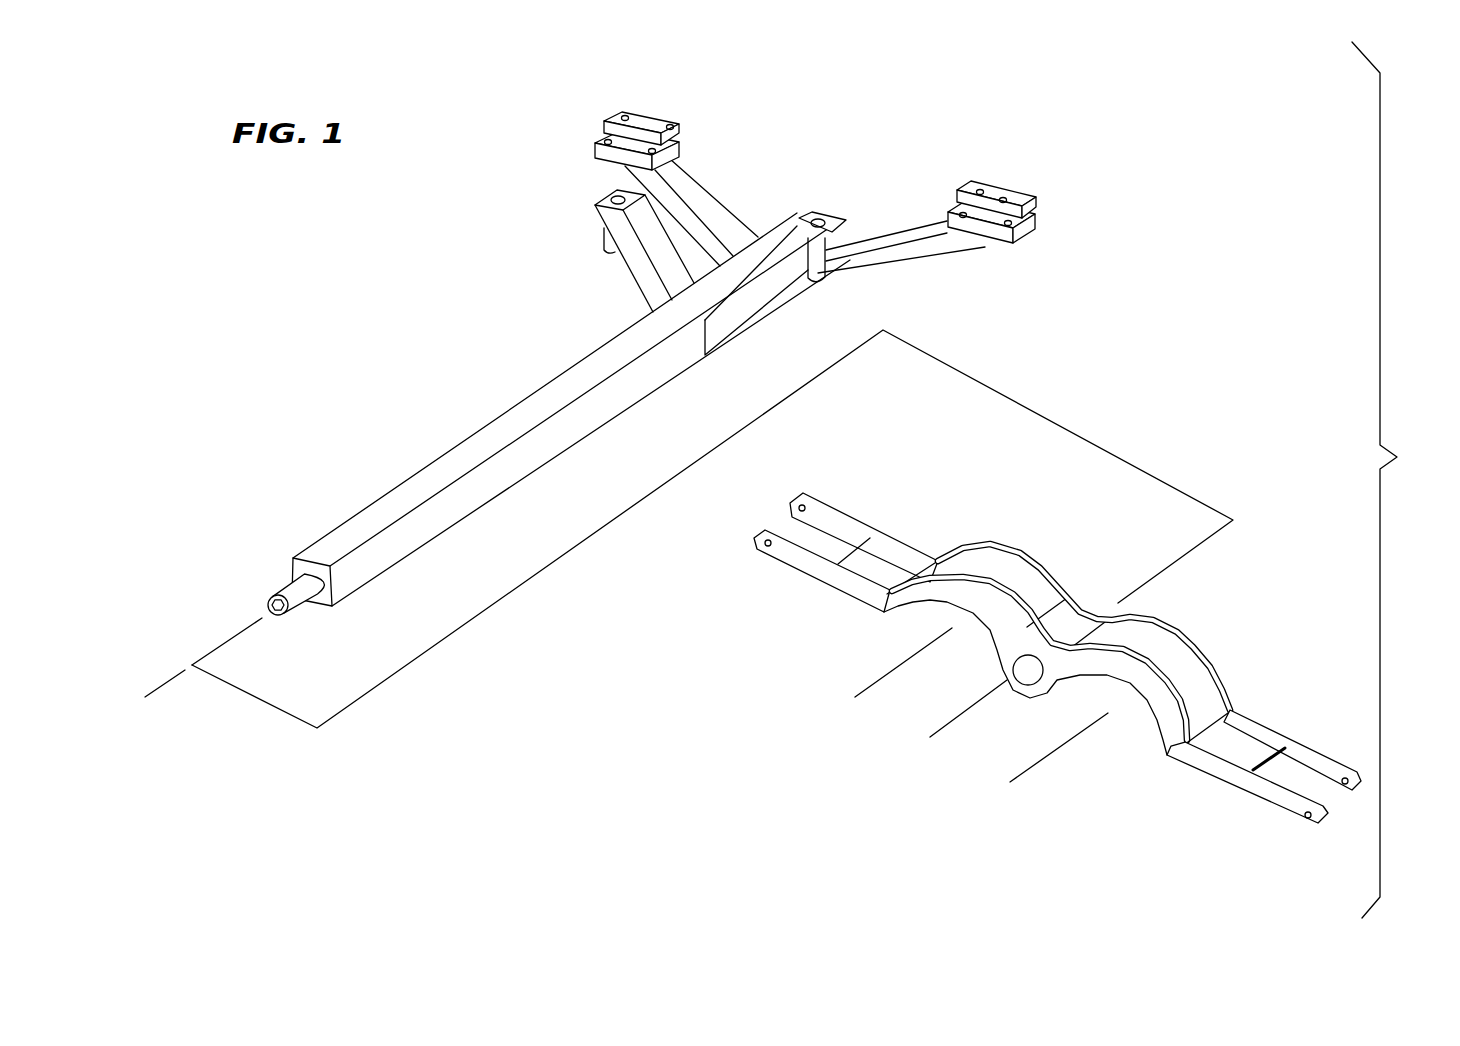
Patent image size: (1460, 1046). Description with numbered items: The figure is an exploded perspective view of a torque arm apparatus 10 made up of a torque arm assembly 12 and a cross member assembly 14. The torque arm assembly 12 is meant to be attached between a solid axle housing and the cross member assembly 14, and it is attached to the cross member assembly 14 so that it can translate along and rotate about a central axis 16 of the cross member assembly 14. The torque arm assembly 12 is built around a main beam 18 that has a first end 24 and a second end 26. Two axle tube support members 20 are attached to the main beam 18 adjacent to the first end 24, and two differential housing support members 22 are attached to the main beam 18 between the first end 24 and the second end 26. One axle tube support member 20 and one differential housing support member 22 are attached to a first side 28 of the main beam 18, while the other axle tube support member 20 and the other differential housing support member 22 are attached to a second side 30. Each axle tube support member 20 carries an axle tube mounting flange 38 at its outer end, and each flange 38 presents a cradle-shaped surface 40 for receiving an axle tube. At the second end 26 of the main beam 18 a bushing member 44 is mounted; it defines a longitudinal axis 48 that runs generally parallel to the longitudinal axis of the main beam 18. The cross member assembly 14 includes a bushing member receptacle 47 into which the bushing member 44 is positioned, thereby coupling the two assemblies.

The torque arm apparatus 10 is at (1404, 480).
The torque arm assembly 12 is at (645, 349).
The cross member assembly 14 is at (1057, 658).
The central axis 16 is at (957, 720).
The main beam 18 is at (518, 409).
The axle tube support members 20 is at (706, 203).
The differential housing support members 22 is at (612, 230).
The first end 24 is at (785, 218).
The second end 26 is at (315, 555).
The first side 28 is at (632, 372).
The second side 30 is at (598, 350).
The axle tube mounting flange 38 is at (682, 135).
The cradle-shaped surface 40 is at (638, 133).
The bushing member 44 is at (303, 598).
The bushing member receptacle 47 is at (1023, 668).
The longitudinal axis 48 is at (155, 690).